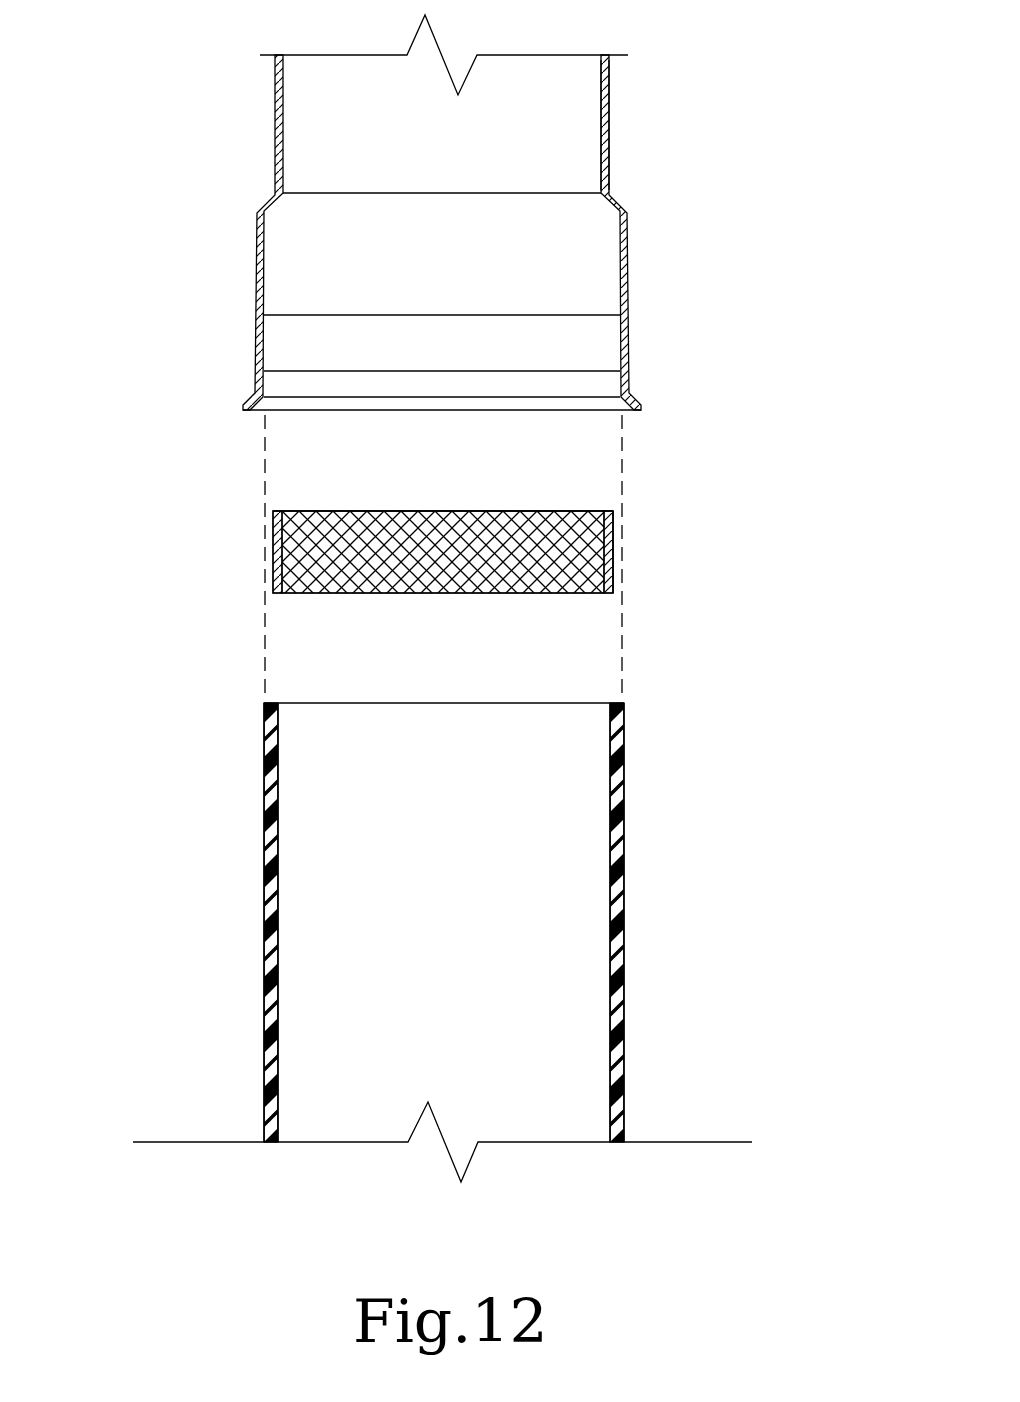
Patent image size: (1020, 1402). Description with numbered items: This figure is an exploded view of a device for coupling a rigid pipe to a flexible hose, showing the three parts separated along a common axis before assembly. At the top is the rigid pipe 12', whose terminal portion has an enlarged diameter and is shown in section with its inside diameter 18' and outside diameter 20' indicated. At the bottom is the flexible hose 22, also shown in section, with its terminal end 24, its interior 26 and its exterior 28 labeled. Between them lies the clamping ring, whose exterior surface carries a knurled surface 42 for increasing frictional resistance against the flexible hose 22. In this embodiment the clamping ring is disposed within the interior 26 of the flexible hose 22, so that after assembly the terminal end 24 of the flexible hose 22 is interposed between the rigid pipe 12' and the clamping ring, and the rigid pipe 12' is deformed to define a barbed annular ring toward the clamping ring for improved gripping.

The rigid pipe 12' is at (483, 210).
The inside diameter of the rigid pipe 18' is at (564, 100).
The outside diameter of the rigid pipe 20' is at (666, 125).
The flexible hose 22 is at (626, 838).
The terminal end of the flexible hose 24 is at (624, 733).
The interior of the flexible hose 26 is at (610, 893).
The exterior of the flexible hose 28 is at (624, 946).
The knurled surface 42 is at (273, 550).